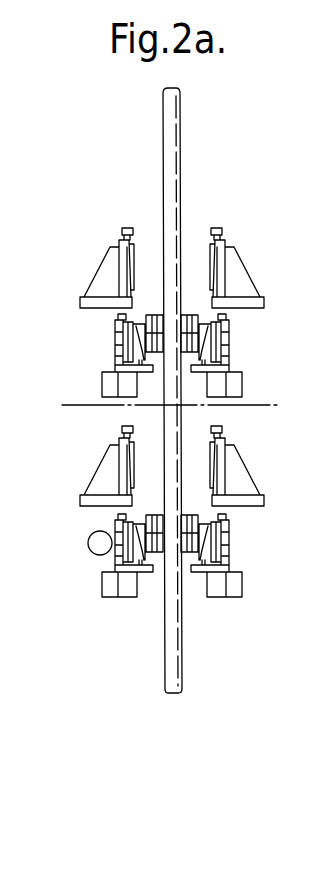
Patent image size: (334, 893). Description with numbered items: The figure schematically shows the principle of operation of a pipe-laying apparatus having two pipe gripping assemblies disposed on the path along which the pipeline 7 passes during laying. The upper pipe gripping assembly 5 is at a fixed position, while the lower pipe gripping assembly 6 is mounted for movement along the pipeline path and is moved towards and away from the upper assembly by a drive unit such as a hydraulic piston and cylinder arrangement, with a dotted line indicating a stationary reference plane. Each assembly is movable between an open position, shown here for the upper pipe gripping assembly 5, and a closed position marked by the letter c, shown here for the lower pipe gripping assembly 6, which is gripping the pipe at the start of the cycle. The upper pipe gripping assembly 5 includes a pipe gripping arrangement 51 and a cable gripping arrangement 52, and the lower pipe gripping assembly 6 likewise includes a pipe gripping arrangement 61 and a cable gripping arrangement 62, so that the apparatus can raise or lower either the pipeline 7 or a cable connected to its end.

The pipeline 7 is at (168, 152).
The upper pipe gripping assembly 5 is at (54, 233).
The lower pipe gripping assembly 6 is at (54, 408).
The cable gripping arrangement 52 is at (247, 256).
The pipe gripping arrangement 51 is at (232, 348).
The cable gripping arrangement 62 is at (263, 481).
The pipe gripping arrangement 61 is at (237, 542).